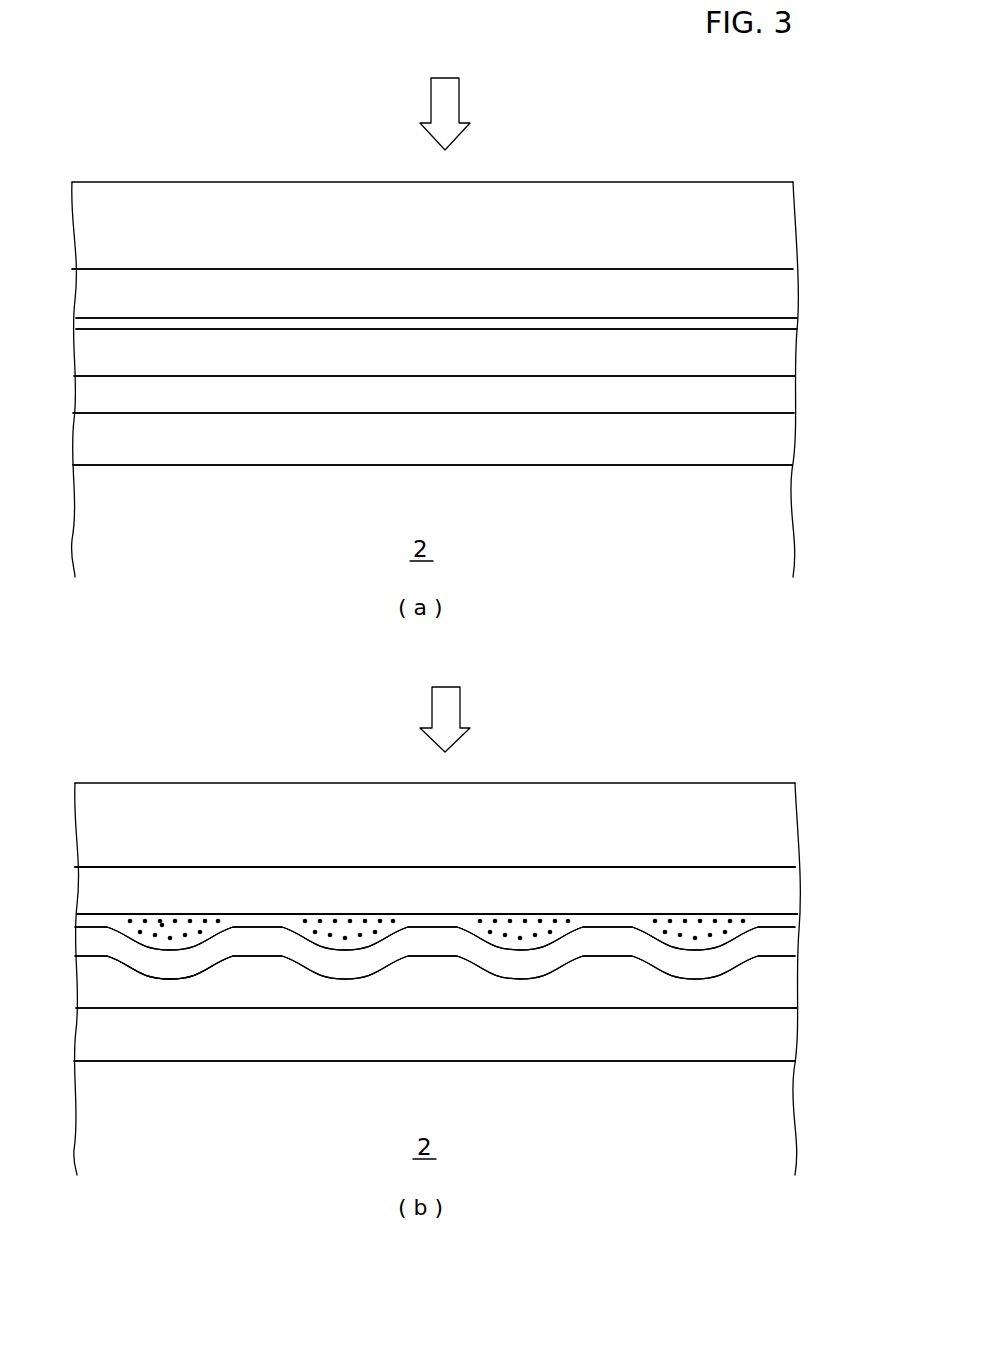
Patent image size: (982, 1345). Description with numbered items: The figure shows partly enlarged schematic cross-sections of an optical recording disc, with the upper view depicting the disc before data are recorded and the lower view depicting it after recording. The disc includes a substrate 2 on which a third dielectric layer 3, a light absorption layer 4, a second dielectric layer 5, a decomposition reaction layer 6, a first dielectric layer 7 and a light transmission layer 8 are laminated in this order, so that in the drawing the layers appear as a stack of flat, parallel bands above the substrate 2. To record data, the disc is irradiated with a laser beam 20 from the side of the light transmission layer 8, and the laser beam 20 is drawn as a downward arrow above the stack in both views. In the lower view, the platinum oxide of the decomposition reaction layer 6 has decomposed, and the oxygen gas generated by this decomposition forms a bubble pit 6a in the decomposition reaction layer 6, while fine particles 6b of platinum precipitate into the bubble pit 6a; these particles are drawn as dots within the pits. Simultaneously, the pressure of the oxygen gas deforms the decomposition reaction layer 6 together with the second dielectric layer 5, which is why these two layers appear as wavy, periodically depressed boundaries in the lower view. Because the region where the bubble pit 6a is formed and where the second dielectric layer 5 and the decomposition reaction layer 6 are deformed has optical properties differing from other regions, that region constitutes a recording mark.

The substrate 2 is at (434, 763).
The third dielectric layer 3 is at (780, 442).
The light absorption layer 4 is at (780, 396).
The second dielectric layer 5 is at (787, 350).
The decomposition reaction layer 6 is at (790, 323).
The bubble pit 6a is at (148, 945).
The fine particles of platinum 6b is at (162, 925).
The first dielectric layer 7 is at (785, 287).
The light transmission layer 8 is at (787, 218).
The laser beam 20 is at (460, 95).